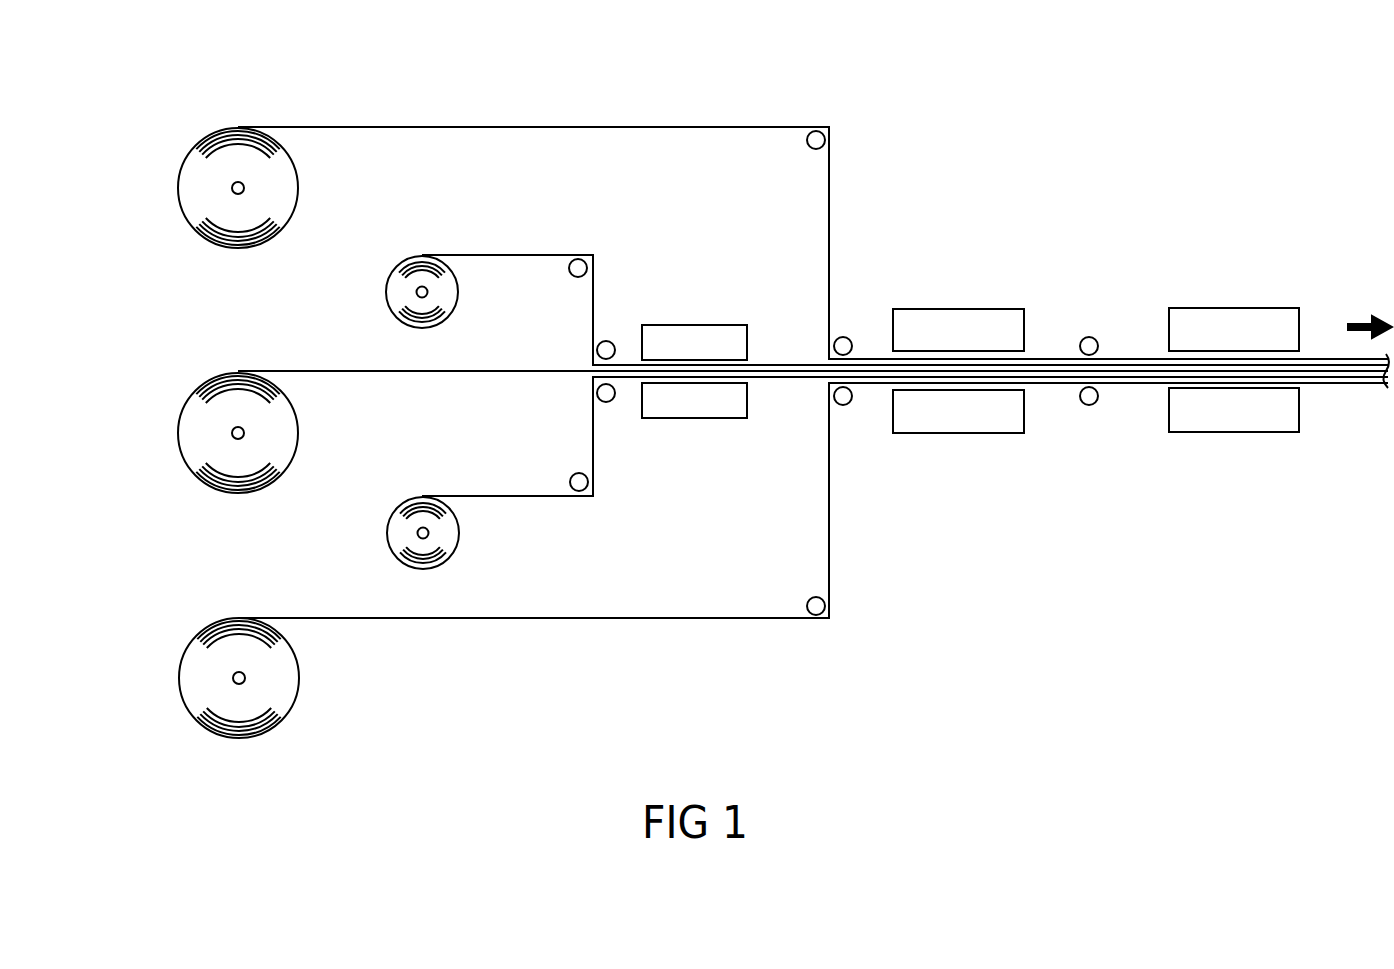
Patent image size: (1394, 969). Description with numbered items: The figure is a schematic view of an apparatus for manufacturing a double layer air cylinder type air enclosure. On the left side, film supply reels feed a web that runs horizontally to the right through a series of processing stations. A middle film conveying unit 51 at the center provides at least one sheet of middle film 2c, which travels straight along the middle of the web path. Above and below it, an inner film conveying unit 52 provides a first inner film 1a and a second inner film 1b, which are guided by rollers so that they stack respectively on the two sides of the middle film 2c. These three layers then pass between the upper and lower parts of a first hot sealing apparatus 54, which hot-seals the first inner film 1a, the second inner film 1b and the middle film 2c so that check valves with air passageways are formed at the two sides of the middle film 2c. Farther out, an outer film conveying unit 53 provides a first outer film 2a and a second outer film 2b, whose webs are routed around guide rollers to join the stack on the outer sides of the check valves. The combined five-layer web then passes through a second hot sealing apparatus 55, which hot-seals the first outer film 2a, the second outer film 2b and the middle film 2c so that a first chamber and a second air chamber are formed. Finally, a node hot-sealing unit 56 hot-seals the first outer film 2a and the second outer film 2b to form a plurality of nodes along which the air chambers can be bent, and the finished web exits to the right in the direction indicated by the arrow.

The first inner film 1a is at (420, 256).
The second inner film 1b is at (420, 497).
The first outer film 2a is at (238, 127).
The second outer film 2b is at (238, 618).
The middle film 2c is at (238, 373).
The middle film conveying unit 51 is at (197, 418).
The inner film conveying unit 52 is at (395, 287).
The outer film conveying unit 53 is at (192, 169).
The first hot sealing apparatus 54 is at (729, 338).
The second hot sealing apparatus 55 is at (972, 337).
The node hot-sealing unit 56 is at (1243, 337).